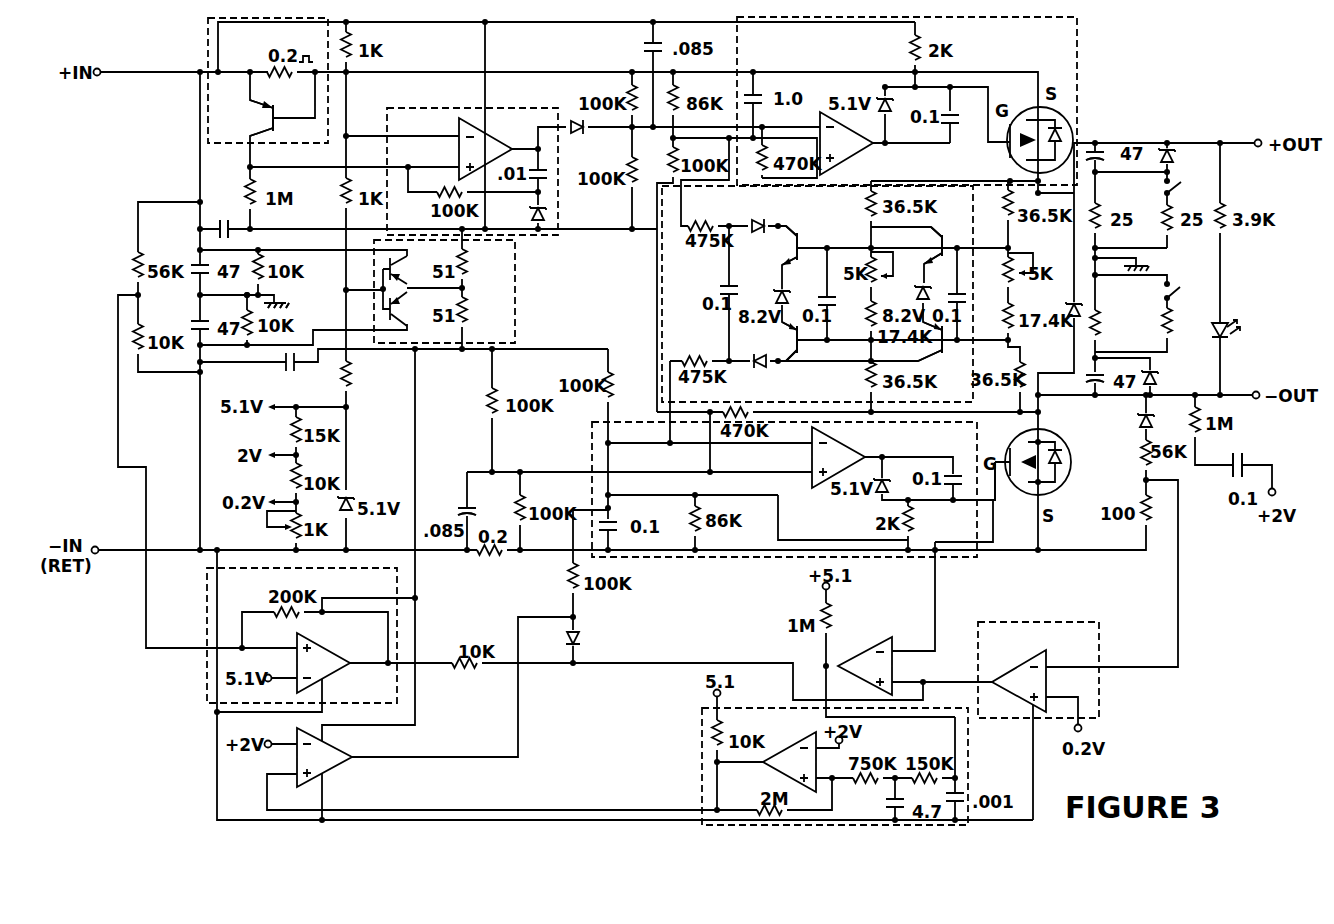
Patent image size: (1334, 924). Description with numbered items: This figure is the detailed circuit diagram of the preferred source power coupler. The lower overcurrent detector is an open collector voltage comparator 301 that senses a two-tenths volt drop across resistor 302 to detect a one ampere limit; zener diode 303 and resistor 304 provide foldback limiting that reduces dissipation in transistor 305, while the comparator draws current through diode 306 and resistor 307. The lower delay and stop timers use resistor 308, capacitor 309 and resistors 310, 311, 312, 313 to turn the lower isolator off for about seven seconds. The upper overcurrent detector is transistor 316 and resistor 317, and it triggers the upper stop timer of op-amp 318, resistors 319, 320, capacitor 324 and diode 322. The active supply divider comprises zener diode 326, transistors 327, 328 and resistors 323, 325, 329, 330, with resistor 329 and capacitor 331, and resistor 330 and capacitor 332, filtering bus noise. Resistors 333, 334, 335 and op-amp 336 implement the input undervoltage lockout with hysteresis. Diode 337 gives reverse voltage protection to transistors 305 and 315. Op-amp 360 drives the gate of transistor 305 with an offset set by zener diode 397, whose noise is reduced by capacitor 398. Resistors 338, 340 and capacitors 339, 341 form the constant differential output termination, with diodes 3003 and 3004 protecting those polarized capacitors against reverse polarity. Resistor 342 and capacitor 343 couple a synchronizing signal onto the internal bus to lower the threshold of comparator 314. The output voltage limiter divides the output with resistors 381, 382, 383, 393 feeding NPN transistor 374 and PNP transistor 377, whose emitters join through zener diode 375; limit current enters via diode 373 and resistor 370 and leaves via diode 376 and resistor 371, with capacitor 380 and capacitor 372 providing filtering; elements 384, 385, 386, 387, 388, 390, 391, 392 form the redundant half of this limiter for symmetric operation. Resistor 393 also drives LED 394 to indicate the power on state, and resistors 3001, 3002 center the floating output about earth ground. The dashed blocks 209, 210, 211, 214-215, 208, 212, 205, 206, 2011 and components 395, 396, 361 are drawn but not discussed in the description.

The input protection circuit 209 is at (208, 62).
The resistor 317 is at (268, 66).
The transistor 316 is at (270, 128).
The resistor 323 is at (352, 49).
The capacitor 324 is at (342, 195).
The capacitor 331 is at (222, 218).
The resistor 319 is at (258, 203).
The resistor 333 is at (135, 265).
The resistor 334 is at (133, 335).
The resistor 3002 is at (247, 295).
The resistor 3001 is at (275, 306).
The capacitor 332 is at (297, 367).
The resistor 325 is at (347, 389).
The zener diode 326 is at (353, 500).
The amplifier circuit 210 is at (494, 109).
The op-amp 318 is at (490, 141).
The diode 322 is at (545, 217).
The resistor 320 is at (437, 196).
The transistor circuit 211 is at (515, 290).
The transistor 327 is at (395, 261).
The transistor 328 is at (399, 317).
The resistor 329 is at (466, 268).
The resistor 330 is at (466, 312).
The regulator circuit 214-215 is at (662, 302).
The resistor 370 is at (708, 222).
The diode 373 is at (762, 222).
The NPN transistor 374 is at (795, 233).
The resistor 381 is at (868, 215).
The capacitor 372 is at (722, 287).
The series zener diode 375 is at (775, 290).
The capacitor 380 is at (822, 297).
The resistor 382 is at (875, 258).
The redundant voltage limit circuit element 384 is at (945, 236).
The redundant voltage limit circuit element 386 is at (950, 282).
The redundant voltage limit circuit element 385 is at (1008, 212).
The redundant voltage limit circuit element 390 is at (1018, 262).
The diode 337 is at (1065, 304).
The resistor 371 is at (694, 353).
The diode 376 is at (765, 372).
The PNP transistor 377 is at (795, 363).
The resistor 383 is at (870, 336).
The resistor 393 is at (868, 377).
The redundant voltage limit circuit element 387 is at (929, 356).
The redundant voltage limit circuit element 388 is at (962, 306).
The redundant voltage limit circuit element 391 is at (1017, 337).
The redundant voltage limit circuit element 392 is at (1017, 403).
The polarized output termination capacitor 341 is at (1090, 376).
The polarized output termination capacitor 339 is at (1110, 146).
The diode 3004 is at (1177, 147).
The transistor 315 is at (1067, 110).
The output switch circuit 208 is at (1077, 72).
The resistor 338 is at (1100, 205).
The 25 ohm resistor 395 is at (1166, 248).
The resistor 396 is at (1222, 204).
The light emitting diode 394 is at (1226, 324).
The resistor 340 is at (1100, 314).
The zener diode 397 is at (1167, 330).
The diode 3003 is at (1158, 379).
The zener diode 303 is at (1135, 420).
The resistor 342 is at (1190, 428).
The capacitor 343 is at (1245, 462).
The resistor 304 is at (1136, 455).
The transistor 305 is at (1052, 493).
The op-amp 360 is at (840, 444).
The capacitor 398 is at (965, 500).
The resistor 302 is at (482, 553).
The resistor 307 is at (572, 583).
The diode 306 is at (580, 628).
The amplifier circuit 212 is at (207, 640).
The resistor 335 is at (275, 605).
The op-amp 336 is at (320, 648).
The operational amplifier 361 is at (883, 637).
The resistor 313 is at (832, 612).
The resistor 310 is at (712, 728).
The oscillator circuit 205 is at (702, 760).
The comparator 314 is at (785, 745).
The resistor 311 is at (760, 805).
The resistor 312 is at (893, 778).
The capacitor 309 is at (887, 800).
The resistor 308 is at (958, 787).
The open collector voltage comparator 301 is at (1015, 666).
The comparator circuit 2011 is at (1075, 622).
The control circuit 206 is at (976, 558).